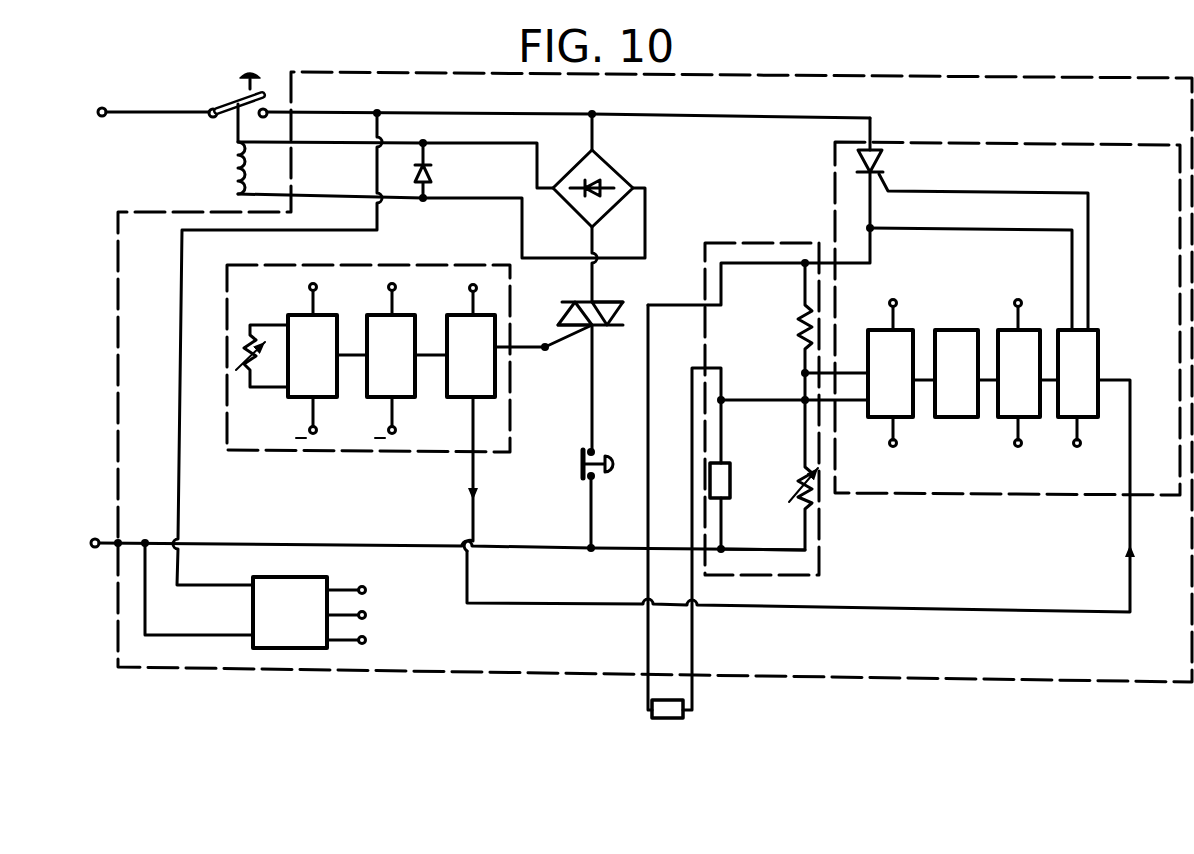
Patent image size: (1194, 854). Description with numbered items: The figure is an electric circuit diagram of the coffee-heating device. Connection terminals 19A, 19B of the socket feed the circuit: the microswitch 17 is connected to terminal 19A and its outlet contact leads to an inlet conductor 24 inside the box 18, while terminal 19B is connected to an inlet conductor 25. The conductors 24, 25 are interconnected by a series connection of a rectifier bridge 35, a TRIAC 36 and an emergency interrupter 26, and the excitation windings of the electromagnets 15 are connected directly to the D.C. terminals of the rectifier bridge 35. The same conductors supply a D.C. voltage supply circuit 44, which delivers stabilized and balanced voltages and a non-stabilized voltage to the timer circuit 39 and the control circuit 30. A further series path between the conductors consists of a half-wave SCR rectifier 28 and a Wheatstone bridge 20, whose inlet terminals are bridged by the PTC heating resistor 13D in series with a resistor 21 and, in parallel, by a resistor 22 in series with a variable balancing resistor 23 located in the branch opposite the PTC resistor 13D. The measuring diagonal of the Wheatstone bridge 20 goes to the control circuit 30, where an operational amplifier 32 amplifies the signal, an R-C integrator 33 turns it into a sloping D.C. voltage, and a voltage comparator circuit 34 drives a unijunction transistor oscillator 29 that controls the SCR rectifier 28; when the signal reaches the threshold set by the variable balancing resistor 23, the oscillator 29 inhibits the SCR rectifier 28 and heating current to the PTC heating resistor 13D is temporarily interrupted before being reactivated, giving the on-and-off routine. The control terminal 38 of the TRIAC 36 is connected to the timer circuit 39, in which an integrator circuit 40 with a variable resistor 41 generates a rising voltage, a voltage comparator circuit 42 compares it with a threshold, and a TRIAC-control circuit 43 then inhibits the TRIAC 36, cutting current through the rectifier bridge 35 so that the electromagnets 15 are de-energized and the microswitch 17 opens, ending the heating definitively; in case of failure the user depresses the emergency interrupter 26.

The PTC heating resistor 13D is at (700, 704).
The electromagnets 15 is at (232, 170).
The microswitch 17 is at (226, 92).
The box 18 is at (776, 68).
The connection terminal 19A is at (150, 98).
The connection terminal 19B is at (437, 532).
The Wheatstone bridge 20 is at (824, 549).
The resistor 21 is at (732, 492).
The resistor 22 is at (798, 320).
The variable balancing resistor 23 is at (798, 470).
The inlet conductor 24 is at (718, 116).
The inlet conductor 25 is at (527, 555).
The emergency interrupter 26 is at (606, 450).
The half-wave SCR rectifier 28 is at (888, 166).
The unijunction transistor oscillator 29 is at (1090, 328).
The control circuit 30 is at (989, 133).
The operational amplifier 32 is at (882, 337).
The integrator 33 is at (957, 406).
The voltage comparator circuit 34 is at (1022, 345).
The rectifier bridge 35 is at (611, 172).
The TRIAC 36 is at (623, 312).
The control terminal 38 is at (548, 355).
The timer circuit 39 is at (512, 458).
The integrator circuit 40 is at (298, 390).
The variable resistor 41 is at (234, 364).
The voltage comparator circuit 42 is at (384, 388).
The TRIAC-control circuit 43 is at (464, 383).
The D.C. voltage supply circuit 44 is at (298, 590).